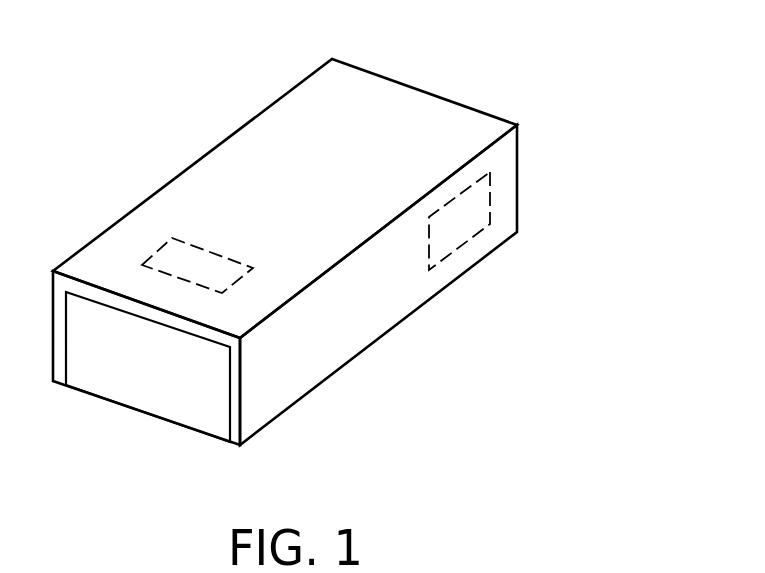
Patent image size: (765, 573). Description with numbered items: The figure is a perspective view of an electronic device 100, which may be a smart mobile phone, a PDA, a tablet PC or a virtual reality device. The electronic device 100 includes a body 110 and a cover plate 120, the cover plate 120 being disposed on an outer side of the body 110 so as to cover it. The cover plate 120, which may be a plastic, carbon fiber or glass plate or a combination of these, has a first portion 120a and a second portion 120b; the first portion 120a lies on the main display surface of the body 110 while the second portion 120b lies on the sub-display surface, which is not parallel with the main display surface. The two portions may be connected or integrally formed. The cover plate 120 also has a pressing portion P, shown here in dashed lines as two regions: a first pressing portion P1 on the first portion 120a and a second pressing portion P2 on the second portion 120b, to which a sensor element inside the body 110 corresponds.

The electronic device 100 is at (621, 497).
The body 110 is at (143, 387).
The cover plate 120 is at (612, 23).
The first portion 120a is at (403, 102).
The second portion 120b is at (333, 348).
The pressing portion P is at (612, 128).
The first pressing portion P1 is at (168, 240).
The second pressing portion P2 is at (460, 230).